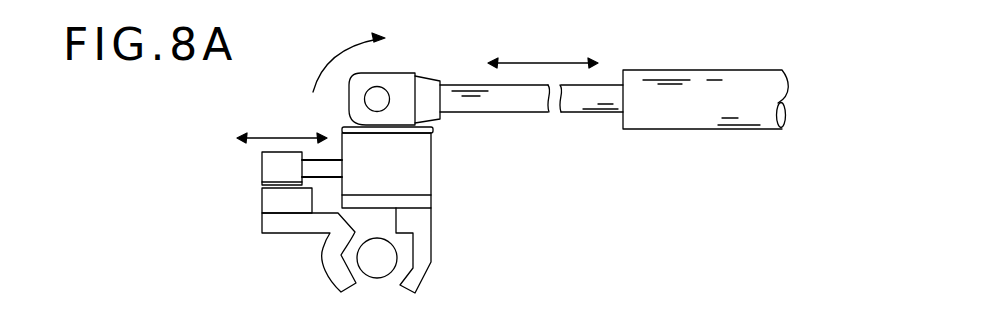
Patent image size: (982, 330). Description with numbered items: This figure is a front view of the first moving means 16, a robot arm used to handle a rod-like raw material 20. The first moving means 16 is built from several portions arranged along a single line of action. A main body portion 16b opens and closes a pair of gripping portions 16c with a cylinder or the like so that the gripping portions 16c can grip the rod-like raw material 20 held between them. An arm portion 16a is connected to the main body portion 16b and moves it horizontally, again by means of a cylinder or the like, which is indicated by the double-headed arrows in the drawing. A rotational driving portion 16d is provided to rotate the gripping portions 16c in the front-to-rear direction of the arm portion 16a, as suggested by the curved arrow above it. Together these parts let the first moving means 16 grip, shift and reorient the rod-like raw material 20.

The first moving means 16 is at (521, 207).
The arm portion 16a is at (752, 82).
The main body portion 16b is at (422, 159).
The gripping portions 16c is at (337, 279).
The rotational driving portion 16d is at (393, 72).
The rod-like raw material 20 is at (378, 270).